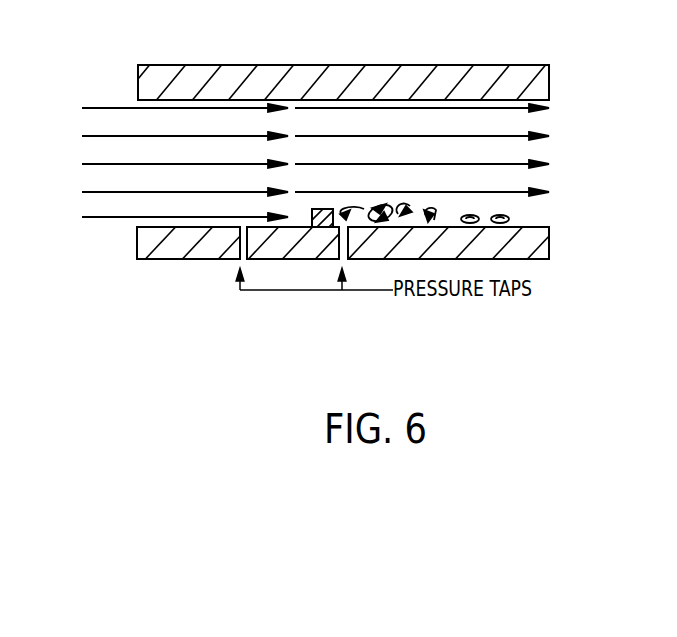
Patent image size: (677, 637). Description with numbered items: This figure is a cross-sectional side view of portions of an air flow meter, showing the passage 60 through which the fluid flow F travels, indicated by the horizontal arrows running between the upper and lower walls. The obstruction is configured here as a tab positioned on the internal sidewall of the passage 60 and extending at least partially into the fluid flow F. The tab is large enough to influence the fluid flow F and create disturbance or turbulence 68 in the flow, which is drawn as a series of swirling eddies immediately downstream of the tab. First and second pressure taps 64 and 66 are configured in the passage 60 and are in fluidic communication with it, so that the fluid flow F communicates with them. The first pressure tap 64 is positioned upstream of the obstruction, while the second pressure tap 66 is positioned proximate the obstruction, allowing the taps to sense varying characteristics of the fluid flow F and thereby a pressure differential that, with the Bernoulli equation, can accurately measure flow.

The passage 60 is at (381, 65).
The fluid flow F is at (545, 137).
The first pressure tap 64 is at (243, 260).
The second pressure tap 66 is at (345, 260).
The turbulence 68 is at (425, 218).